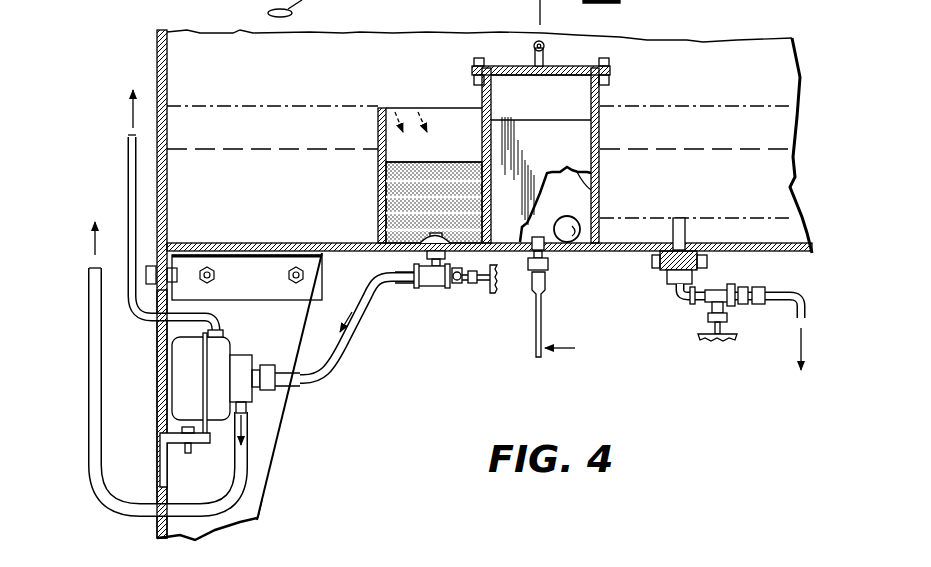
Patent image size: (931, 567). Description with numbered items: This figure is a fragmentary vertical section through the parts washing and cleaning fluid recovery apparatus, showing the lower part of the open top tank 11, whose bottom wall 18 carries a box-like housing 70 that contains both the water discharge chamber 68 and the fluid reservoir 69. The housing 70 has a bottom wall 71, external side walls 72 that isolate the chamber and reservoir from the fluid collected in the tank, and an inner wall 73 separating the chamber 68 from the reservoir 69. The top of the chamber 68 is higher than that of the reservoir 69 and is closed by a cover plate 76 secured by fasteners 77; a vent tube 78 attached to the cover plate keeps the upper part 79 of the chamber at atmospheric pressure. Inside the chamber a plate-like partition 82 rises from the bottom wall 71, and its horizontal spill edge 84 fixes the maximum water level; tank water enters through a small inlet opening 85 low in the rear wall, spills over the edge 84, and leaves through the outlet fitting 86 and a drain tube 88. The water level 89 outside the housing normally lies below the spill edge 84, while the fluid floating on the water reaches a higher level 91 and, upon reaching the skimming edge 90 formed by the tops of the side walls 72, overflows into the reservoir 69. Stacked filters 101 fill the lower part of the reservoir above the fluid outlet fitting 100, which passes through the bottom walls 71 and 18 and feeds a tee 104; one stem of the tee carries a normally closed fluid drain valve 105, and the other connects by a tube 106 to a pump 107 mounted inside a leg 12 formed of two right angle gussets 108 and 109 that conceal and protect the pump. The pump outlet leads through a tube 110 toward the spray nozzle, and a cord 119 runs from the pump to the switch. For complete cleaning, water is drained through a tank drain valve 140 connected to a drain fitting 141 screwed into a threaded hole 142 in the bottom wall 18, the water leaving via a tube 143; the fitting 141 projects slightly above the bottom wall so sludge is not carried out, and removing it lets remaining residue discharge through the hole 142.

The tank 11 is at (147, 53).
The leg 12 is at (290, 450).
The bottom wall 18 is at (778, 257).
The water discharge chamber 68 is at (606, 110).
The fluid reservoir 69 is at (375, 132).
The housing 70 is at (606, 141).
The bottom wall 71 is at (502, 240).
The external side walls 72 is at (378, 190).
The inner wall 73 is at (482, 140).
The cover plate 76 is at (500, 66).
The fasteners 77 is at (614, 44).
The vent tube 78 is at (534, 50).
The upper part 79 is at (503, 97).
The partition 82 is at (599, 192).
The spill edge 84 is at (547, 120).
The inlet opening 85 is at (578, 231).
The outlet fitting 86 is at (546, 258).
The drain tube 88 is at (530, 304).
The water level 89 is at (718, 155).
The skimming edge 90 is at (425, 108).
The fluid level 91 is at (276, 106).
The outlet fitting 100 is at (432, 268).
The filters 101 is at (378, 212).
The tee 104 is at (440, 290).
The fluid drain valve 105 is at (482, 292).
The tube 106 is at (346, 335).
The pump 107 is at (235, 340).
The right angle gusset 108 is at (150, 462).
The right angle gusset 109 is at (267, 497).
The tube 110 is at (88, 365).
The cord 119 is at (128, 148).
The tank drain valve 140 is at (720, 343).
The drain fitting 141 is at (662, 270).
The threaded hole 142 is at (688, 250).
The tube 143 is at (788, 310).